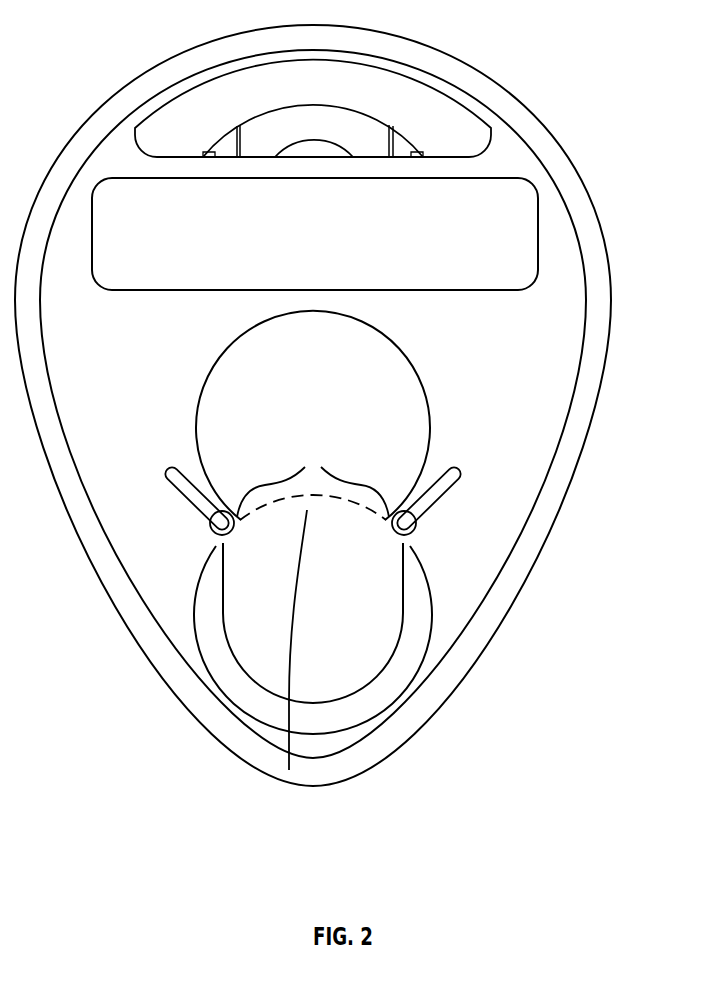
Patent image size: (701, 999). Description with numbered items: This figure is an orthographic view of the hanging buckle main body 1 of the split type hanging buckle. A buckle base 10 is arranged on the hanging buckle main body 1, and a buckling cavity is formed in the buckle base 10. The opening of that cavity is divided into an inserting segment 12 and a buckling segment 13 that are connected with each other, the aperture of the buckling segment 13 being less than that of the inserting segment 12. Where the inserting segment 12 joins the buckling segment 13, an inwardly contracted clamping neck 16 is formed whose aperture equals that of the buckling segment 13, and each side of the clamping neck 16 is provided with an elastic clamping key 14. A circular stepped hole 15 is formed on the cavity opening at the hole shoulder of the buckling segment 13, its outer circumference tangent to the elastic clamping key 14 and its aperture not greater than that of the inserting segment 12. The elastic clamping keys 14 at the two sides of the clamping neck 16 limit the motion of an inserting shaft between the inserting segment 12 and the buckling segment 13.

The hanging buckle main body 1 is at (137, 60).
The buckle base 10 is at (465, 608).
The inserting segment 12 is at (393, 386).
The buckling segment 13 is at (250, 597).
The elastic clamping key 14 is at (313, 474).
The stepped hole 15 is at (387, 686).
The clamping neck 16 is at (289, 770).